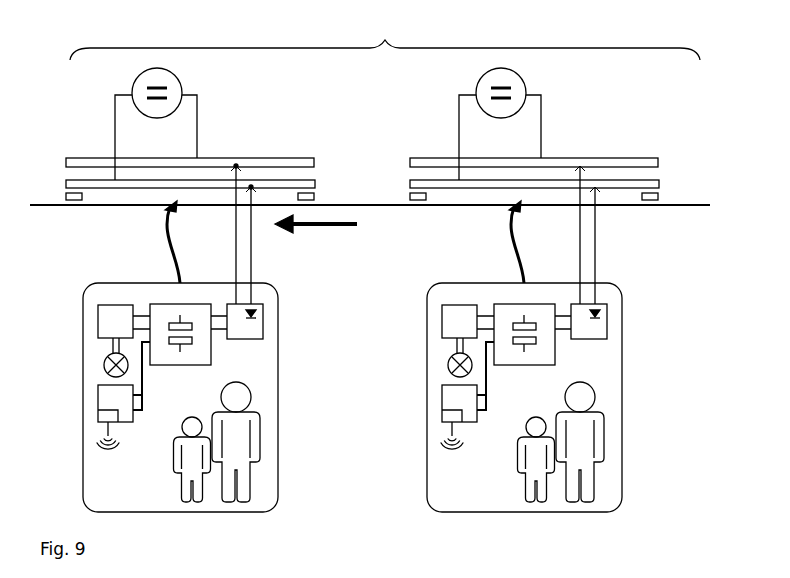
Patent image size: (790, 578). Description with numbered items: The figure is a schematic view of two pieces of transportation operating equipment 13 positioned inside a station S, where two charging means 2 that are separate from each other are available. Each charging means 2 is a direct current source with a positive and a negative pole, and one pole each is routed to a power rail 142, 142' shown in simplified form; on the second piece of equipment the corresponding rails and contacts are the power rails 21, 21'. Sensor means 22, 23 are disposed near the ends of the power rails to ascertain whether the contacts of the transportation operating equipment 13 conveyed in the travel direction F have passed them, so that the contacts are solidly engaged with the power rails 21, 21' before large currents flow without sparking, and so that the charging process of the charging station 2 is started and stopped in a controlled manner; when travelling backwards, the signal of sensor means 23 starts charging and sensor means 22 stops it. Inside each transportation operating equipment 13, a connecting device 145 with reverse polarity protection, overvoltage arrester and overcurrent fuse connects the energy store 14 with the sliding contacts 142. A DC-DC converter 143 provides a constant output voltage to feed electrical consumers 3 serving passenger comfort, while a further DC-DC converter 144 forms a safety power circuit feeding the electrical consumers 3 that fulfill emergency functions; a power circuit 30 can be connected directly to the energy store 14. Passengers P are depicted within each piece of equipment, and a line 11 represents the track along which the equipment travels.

The station S is at (385, 36).
The charging means 2 is at (168, 81).
The power rail / contact 142 is at (277, 193).
The power rail / contact 142' is at (295, 207).
The power rail / contact 21 is at (609, 193).
The power rail / contact 21' is at (632, 207).
The sensor means 22 is at (316, 197).
The sensor means 23 is at (75, 198).
The ground / track line 11 is at (680, 206).
The travel direction F is at (316, 233).
The power circuit 30 is at (138, 287).
The transportation operating equipment 13 is at (280, 403).
The DC-DC converter 143 is at (105, 330).
The DC-DC converter 144 is at (105, 400).
The electrical consumers 3 is at (106, 366).
The energy store 14 is at (208, 352).
The connecting device 145 is at (258, 332).
The passengers P is at (243, 486).